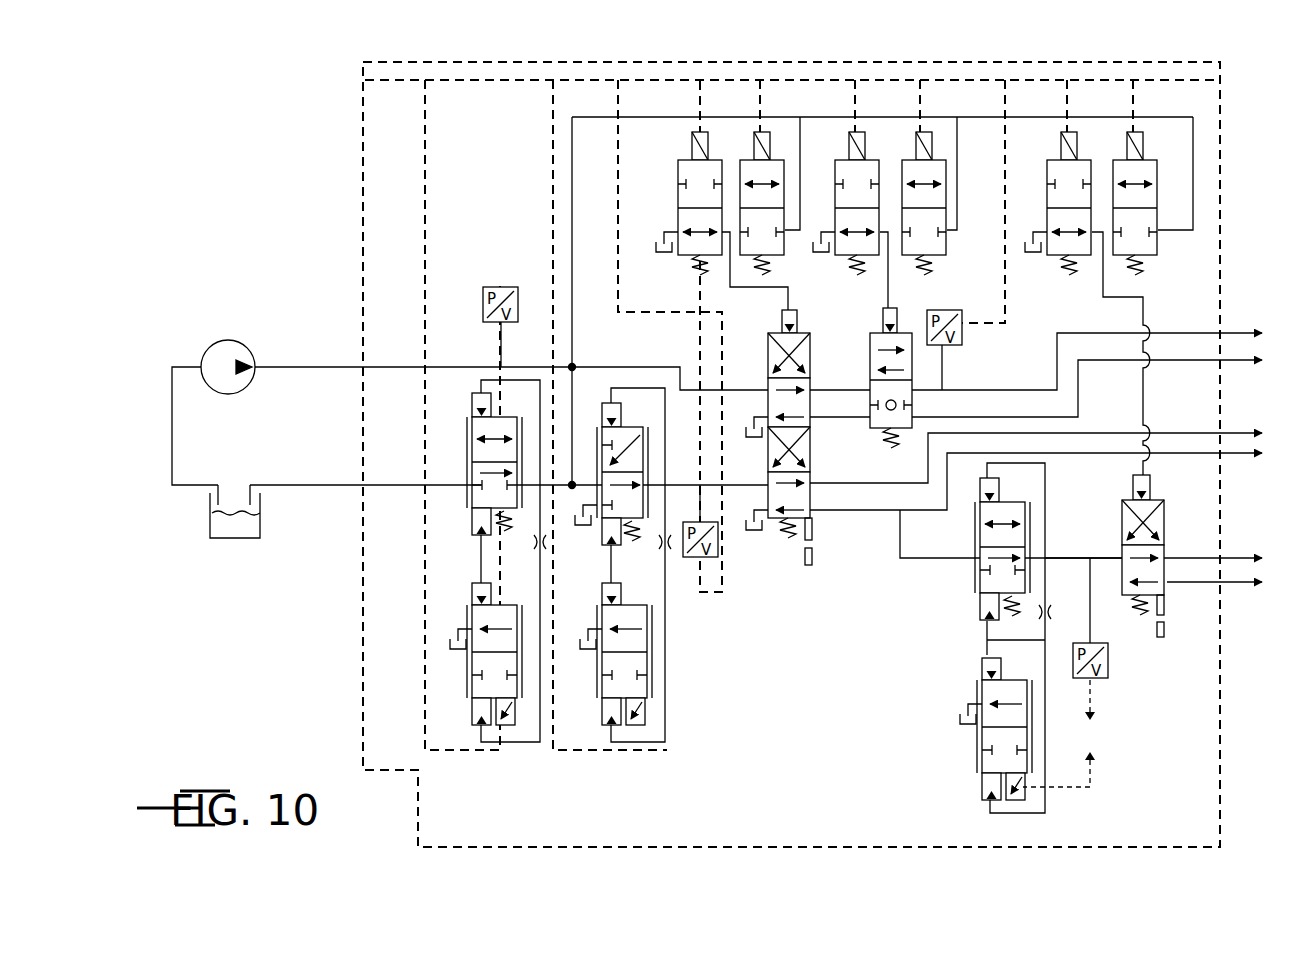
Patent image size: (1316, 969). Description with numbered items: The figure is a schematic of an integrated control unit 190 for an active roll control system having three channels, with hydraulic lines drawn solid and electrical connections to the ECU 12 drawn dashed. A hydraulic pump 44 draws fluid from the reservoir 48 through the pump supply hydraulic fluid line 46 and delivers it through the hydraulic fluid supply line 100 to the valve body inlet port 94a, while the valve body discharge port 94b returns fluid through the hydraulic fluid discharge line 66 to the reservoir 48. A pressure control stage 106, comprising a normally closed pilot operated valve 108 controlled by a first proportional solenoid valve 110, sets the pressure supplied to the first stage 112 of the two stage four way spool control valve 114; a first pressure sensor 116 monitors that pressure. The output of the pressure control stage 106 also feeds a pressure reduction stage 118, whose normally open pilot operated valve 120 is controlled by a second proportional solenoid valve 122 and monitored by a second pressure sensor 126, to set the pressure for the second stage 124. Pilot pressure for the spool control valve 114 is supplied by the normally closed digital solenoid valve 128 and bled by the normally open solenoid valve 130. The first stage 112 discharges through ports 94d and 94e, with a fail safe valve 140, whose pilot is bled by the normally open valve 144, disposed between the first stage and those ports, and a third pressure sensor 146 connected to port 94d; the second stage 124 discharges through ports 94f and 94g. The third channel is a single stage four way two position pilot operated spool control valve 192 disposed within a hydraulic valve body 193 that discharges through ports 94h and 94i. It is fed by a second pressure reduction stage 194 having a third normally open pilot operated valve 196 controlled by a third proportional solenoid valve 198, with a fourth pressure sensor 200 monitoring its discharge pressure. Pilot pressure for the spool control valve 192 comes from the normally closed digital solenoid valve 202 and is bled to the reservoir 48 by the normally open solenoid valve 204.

The ECU 12 is at (1222, 62).
The integrated control unit 190 is at (324, 156).
The hydraulic valve body 193 is at (1222, 700).
The hydraulic pump 44 is at (210, 352).
The pump supply hydraulic fluid line 46 is at (172, 440).
The reservoir 48 is at (210, 530).
The hydraulic fluid discharge line 66 is at (272, 485).
The hydraulic fluid supply line 100 is at (290, 367).
The valve body inlet port 94a is at (365, 367).
The valve body discharge port 94b is at (365, 485).
The pressure control stage 106 is at (464, 452).
The normally closed pilot operated valve 108 is at (470, 488).
The first proportional solenoid valve 110 is at (470, 658).
The first pressure sensor 116 is at (483, 305).
The pressure reduction stage 118 is at (692, 420).
The normally open pilot operated valve 120 is at (620, 436).
The second proportional solenoid valve 122 is at (645, 668).
The second pressure sensor 126 is at (718, 550).
The normally open solenoid valve 130 is at (678, 193).
The normally closed digital solenoid valve 128 is at (775, 258).
The spool control valve 114 is at (778, 318).
The normally open valve 144 is at (865, 163).
The first stage 112 is at (834, 350).
The second stage 124 is at (834, 448).
The fail safe valve 140 is at (868, 406).
The third pressure sensor 146 is at (951, 344).
The normally open solenoid valve 204 is at (1055, 258).
The normally closed digital solenoid valve 202 is at (1147, 256).
The discharge port 94d is at (1220, 333).
The discharge port 94e is at (1220, 360).
The discharge port 94f is at (1220, 433).
The discharge port 94g is at (1220, 453).
The discharge port 94h is at (1220, 558).
The discharge port 94i is at (1220, 582).
The spool control valve 192 is at (1120, 495).
The second pressure reduction stage 194 is at (950, 640).
The third normally open pilot operated valve 196 is at (1032, 545).
The third proportional solenoid valve 198 is at (980, 760).
The fourth pressure sensor 200 is at (1110, 662).